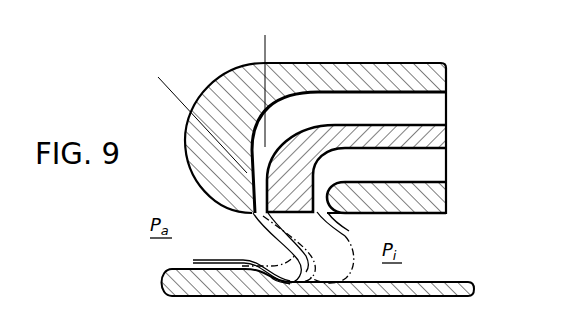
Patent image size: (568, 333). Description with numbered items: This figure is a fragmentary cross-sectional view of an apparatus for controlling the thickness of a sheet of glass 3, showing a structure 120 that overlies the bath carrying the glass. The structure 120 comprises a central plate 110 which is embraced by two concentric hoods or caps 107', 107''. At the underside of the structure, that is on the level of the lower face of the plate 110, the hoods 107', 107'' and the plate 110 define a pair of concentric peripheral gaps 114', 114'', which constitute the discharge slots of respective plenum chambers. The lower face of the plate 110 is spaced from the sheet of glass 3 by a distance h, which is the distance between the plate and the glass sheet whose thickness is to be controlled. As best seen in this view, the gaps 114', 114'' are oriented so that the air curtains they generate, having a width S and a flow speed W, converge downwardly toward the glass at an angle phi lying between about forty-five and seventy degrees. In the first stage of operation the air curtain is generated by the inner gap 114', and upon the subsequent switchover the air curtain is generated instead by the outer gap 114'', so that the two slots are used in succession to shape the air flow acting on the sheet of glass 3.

The structure 120 is at (349, 152).
The outer hood or cap 107'' is at (348, 138).
The inner hood or cap 107' is at (390, 168).
The central plate 110 is at (438, 194).
The outer peripheral gap 114'' is at (257, 248).
The inner peripheral gap 114' is at (345, 247).
The sheet of glass 3 is at (446, 293).
The flow speed W is at (190, 264).
The distance between plate and sheet of glass h is at (436, 215).
The width of air curtain S is at (287, 236).
The angle phi is at (262, 45).